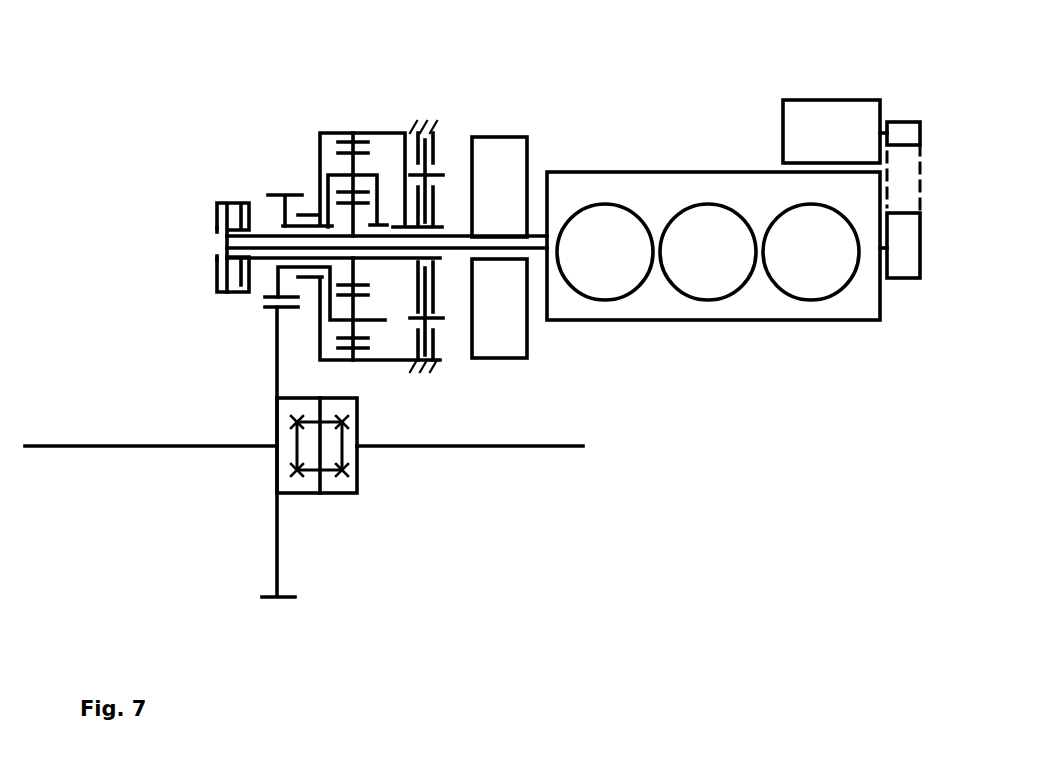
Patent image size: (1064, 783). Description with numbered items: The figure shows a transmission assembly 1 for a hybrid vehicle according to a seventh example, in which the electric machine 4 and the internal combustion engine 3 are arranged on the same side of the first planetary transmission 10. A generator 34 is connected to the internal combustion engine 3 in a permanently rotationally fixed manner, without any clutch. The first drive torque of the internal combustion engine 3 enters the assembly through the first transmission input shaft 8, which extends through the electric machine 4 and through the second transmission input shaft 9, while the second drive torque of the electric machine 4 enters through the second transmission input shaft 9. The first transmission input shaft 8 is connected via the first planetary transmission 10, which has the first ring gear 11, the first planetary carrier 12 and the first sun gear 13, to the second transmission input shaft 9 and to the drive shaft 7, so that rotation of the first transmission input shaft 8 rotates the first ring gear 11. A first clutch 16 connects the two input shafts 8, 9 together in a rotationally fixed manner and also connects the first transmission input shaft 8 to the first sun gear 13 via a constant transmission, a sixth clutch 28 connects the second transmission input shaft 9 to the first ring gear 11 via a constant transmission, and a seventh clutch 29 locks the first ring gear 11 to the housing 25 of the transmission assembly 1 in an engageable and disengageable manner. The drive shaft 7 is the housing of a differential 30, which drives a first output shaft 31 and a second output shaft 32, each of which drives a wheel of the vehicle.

The transmission assembly 1 is at (253, 134).
The internal combustion engine 3 is at (630, 190).
The electric machine 4 is at (498, 173).
The drive shaft 7 is at (276, 542).
The first transmission input shaft 8 is at (276, 243).
The second transmission input shaft 9 is at (264, 259).
The first planetary transmission 10 is at (340, 97).
The first ring gear 11 is at (320, 131).
The first planetary carrier 12 is at (285, 215).
The first sun gear 13 is at (354, 262).
The first clutch 16 is at (216, 239).
The housing 25 is at (413, 123).
The sixth clutch 28 is at (432, 310).
The seventh clutch 29 is at (434, 160).
The differential 30 is at (340, 493).
The first output shaft 31 is at (480, 443).
The second output shaft 32 is at (105, 443).
The generator 34 is at (831, 122).